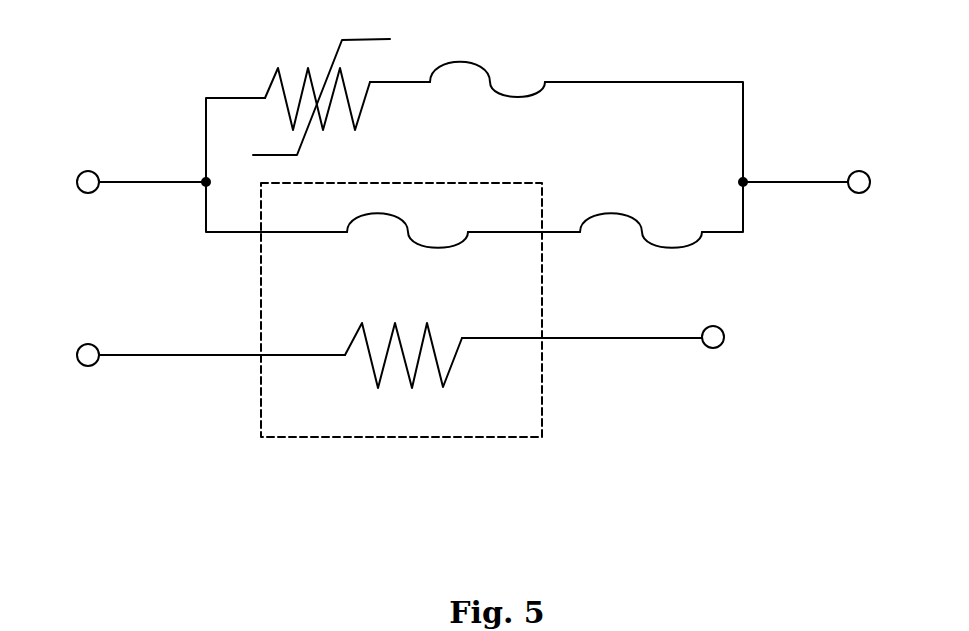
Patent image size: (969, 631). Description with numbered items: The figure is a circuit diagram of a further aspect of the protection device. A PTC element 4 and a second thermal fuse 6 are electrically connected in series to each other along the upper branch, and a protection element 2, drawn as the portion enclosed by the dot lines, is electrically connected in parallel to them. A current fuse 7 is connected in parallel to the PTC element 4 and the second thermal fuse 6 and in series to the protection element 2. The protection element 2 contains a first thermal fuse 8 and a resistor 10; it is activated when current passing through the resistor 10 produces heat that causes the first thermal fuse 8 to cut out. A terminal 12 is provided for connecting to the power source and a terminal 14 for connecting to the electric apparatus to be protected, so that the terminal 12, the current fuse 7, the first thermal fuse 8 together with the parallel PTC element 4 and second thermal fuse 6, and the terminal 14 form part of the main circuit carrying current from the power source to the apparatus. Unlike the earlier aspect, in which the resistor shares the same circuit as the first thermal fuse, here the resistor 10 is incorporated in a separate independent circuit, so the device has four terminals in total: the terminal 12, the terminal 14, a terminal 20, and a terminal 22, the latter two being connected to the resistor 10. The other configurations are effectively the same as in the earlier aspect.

The protection element 2 is at (422, 313).
The PTC element 4 is at (321, 77).
The second thermal fuse 6 is at (487, 60).
The current fuse 7 is at (641, 213).
The first thermal fuse 8 is at (407, 242).
The resistor 10 is at (390, 361).
The terminal 12 is at (831, 182).
The terminal 14 is at (116, 182).
The terminal 20 is at (617, 337).
The terminal 22 is at (185, 355).